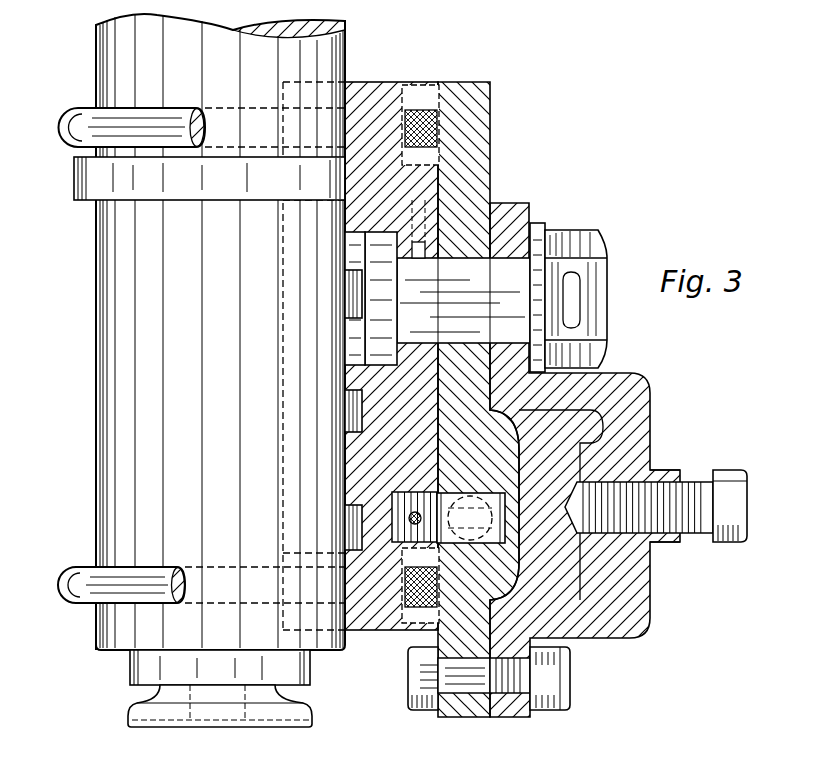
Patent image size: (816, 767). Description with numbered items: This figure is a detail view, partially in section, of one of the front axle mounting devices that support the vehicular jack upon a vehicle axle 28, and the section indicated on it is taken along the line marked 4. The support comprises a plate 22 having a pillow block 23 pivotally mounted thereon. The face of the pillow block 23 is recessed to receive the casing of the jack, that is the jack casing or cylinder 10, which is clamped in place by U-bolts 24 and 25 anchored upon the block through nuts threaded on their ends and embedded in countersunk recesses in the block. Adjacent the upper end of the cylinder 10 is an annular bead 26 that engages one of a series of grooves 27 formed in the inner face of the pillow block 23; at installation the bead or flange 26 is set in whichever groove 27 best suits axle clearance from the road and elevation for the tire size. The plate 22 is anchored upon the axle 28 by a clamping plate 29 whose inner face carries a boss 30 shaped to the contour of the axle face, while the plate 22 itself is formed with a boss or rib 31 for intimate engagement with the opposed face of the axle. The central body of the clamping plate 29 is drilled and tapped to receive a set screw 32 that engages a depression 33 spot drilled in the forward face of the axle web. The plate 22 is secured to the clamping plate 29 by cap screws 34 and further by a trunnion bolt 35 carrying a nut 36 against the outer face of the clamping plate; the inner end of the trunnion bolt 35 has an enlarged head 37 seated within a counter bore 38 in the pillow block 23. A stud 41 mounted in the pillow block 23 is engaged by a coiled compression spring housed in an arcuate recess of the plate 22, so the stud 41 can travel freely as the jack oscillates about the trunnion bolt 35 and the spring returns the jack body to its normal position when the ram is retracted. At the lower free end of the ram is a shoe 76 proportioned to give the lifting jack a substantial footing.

The jack casing or cylinder 10 is at (118, 308).
The plate 22 is at (485, 160).
The pillow block 23 is at (370, 95).
The U-bolt 24 is at (62, 128).
The U-bolt 25 is at (62, 584).
The annular bead 26 is at (80, 182).
The grooves 27 is at (345, 264).
The vehicle axle 28 is at (560, 525).
The clamping plate 29 is at (638, 611).
The boss 30 is at (575, 545).
The boss or rib 31 is at (650, 413).
The set screw 32 is at (730, 496).
The depression 33 is at (650, 548).
The cap screws 34 is at (565, 679).
The trunnion bolt 35 is at (545, 226).
The nut 36 is at (585, 249).
The enlarged head 37 is at (373, 336).
The counter bore 38 is at (345, 352).
The stud 41 is at (415, 524).
The shoe 76 is at (130, 713).
The section line 4- 4 is at (490, 40).